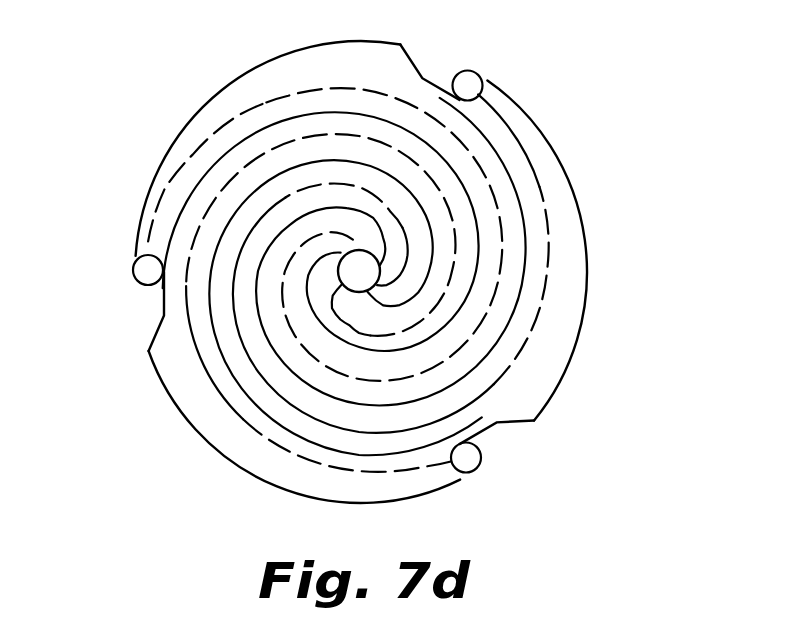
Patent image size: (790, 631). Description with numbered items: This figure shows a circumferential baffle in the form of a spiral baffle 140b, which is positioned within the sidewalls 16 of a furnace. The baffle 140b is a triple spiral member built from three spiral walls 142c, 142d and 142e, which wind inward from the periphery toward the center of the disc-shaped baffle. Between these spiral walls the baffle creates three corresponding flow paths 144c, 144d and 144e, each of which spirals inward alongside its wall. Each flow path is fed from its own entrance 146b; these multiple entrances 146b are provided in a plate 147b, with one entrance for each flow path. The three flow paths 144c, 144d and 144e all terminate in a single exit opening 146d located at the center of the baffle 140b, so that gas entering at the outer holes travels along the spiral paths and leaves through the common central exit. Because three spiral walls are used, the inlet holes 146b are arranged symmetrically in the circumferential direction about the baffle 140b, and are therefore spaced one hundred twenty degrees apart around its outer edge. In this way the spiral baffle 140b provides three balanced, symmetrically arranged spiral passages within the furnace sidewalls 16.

The sidewalls 16 is at (183, 420).
The spiral baffle 140b is at (577, 194).
The spiral wall 142c is at (226, 152).
The spiral wall 142d is at (505, 158).
The spiral wall 142e is at (277, 419).
The flow path 144c is at (254, 108).
The flow path 144d is at (548, 261).
The flow path 144e is at (310, 461).
The entrance 146b is at (147, 267).
The exit opening 146d is at (360, 277).
The plate 147b is at (178, 173).